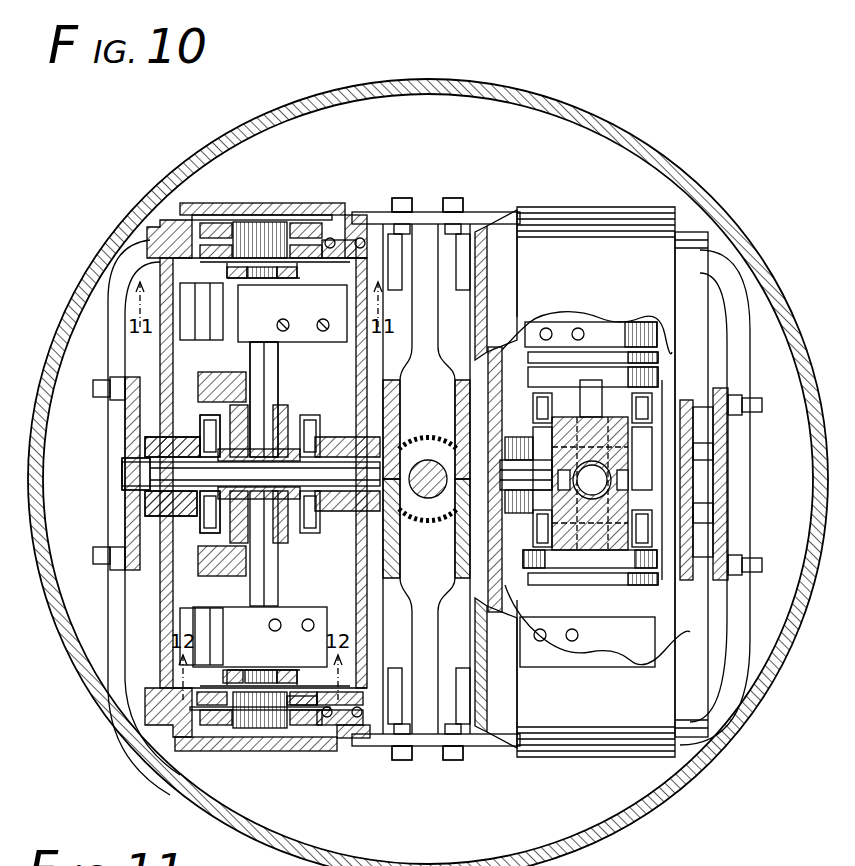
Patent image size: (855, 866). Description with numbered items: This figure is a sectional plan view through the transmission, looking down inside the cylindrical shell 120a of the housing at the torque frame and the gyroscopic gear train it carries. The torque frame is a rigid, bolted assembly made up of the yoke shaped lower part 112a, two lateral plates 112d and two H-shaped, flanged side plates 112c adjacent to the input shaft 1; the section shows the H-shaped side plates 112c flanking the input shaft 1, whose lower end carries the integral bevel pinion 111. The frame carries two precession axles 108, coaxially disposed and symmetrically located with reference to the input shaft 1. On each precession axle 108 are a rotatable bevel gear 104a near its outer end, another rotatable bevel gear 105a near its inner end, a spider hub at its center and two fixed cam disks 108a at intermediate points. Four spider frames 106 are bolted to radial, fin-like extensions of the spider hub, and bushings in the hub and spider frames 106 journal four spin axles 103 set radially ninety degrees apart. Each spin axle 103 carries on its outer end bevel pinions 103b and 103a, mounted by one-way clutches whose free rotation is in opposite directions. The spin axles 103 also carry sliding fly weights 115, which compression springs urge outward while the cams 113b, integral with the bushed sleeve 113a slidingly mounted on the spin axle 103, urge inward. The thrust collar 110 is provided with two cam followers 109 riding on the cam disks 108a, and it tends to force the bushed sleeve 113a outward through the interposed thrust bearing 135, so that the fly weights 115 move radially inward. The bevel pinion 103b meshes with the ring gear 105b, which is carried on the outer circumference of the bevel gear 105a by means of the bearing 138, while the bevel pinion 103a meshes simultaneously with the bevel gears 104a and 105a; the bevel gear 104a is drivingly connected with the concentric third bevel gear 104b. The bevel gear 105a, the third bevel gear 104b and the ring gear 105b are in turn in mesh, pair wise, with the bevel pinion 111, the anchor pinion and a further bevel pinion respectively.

The input shaft 1 is at (420, 440).
The spin axle 103 is at (278, 352).
The bevel pinion 103a is at (247, 246).
The bevel pinion 103b is at (232, 230).
The bevel gear 104a is at (112, 292).
The third bevel gear 104b is at (292, 205).
The bevel gear 105a is at (400, 300).
The ring gear 105b is at (375, 250).
The spider frame 106 is at (300, 276).
The precession axle 108 is at (278, 483).
The cam disk 108a is at (160, 518).
The cam follower 109 is at (200, 438).
The thrust collar 110 is at (190, 587).
The bevel pinion 111 is at (406, 520).
The yoke shaped lower part 112a is at (728, 446).
The side plate 112c is at (390, 372).
The lateral plate 112d is at (112, 262).
The bushed sleeve 113a is at (200, 390).
The cam 113b is at (205, 352).
The fly weight 115 is at (290, 315).
The cylindrical shell 120a is at (304, 95).
The thrust bearing 135 is at (128, 420).
The bearing 138 is at (350, 728).